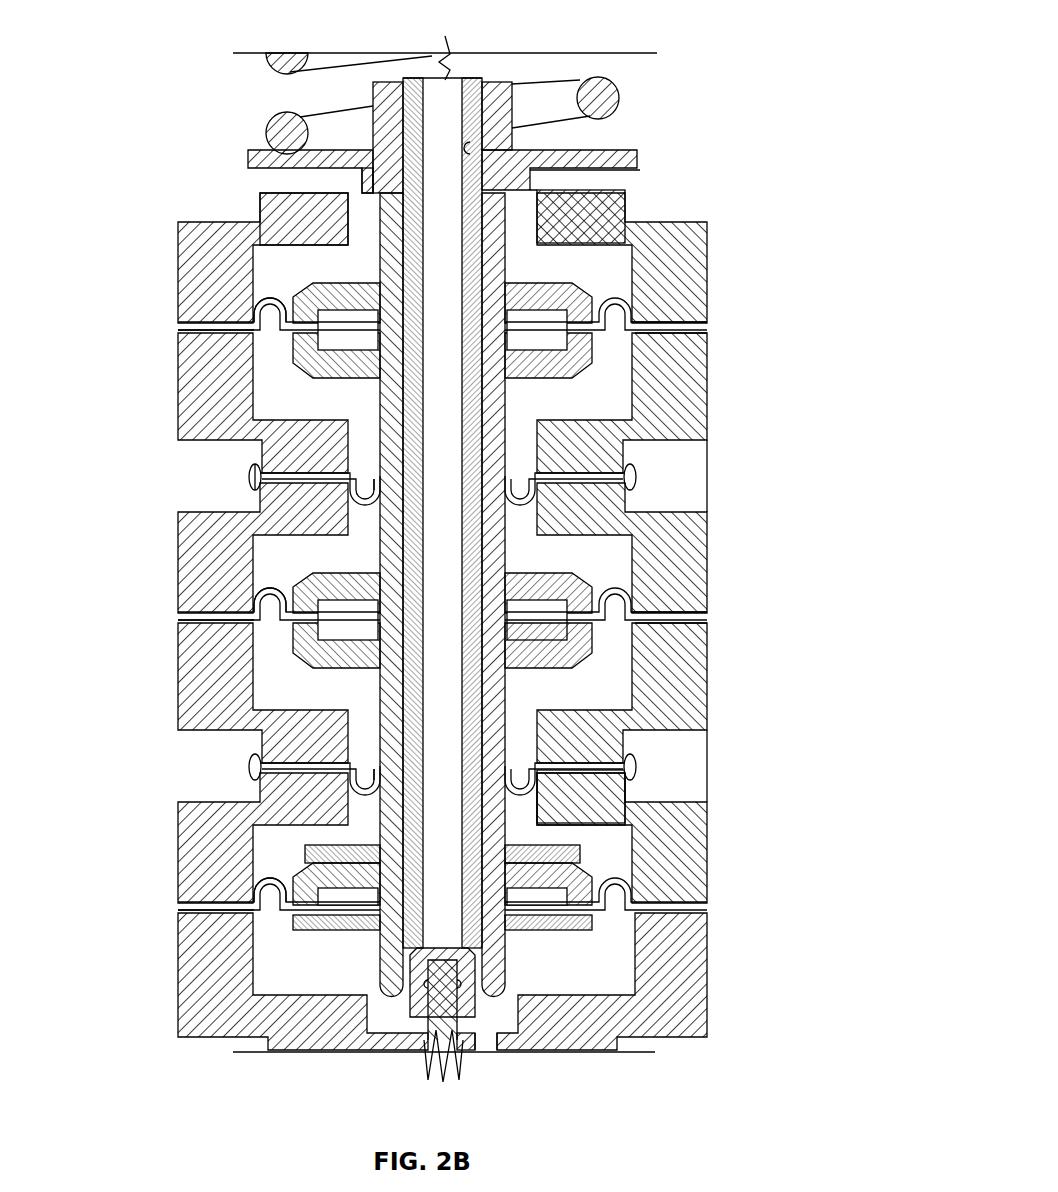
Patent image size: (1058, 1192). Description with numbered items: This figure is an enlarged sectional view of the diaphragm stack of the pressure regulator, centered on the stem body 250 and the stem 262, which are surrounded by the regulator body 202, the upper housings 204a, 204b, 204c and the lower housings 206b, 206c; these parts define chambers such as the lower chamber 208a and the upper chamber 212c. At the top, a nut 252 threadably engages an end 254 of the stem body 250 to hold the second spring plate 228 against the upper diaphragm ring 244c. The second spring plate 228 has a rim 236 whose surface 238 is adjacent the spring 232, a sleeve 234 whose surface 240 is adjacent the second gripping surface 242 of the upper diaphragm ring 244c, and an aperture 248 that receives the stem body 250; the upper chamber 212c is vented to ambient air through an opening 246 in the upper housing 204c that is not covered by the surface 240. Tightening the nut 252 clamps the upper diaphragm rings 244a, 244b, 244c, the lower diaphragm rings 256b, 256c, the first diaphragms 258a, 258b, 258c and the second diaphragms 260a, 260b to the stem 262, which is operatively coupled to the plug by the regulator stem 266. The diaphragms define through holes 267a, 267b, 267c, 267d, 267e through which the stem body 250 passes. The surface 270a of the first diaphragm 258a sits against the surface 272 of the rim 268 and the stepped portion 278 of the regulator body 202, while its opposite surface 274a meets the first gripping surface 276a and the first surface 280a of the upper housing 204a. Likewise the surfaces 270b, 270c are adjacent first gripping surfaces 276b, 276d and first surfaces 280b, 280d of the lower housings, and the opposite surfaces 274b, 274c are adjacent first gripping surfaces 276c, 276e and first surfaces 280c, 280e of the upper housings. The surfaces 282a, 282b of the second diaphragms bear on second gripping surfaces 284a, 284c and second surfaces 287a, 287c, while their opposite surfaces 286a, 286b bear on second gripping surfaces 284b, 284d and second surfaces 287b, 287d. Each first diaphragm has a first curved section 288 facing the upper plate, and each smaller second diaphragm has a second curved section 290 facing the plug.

The regulator body 202 is at (690, 1003).
The upper housing 204a is at (700, 850).
The upper housing 204b is at (700, 560).
The upper housing 204c is at (700, 250).
The lower housing 206b is at (678, 703).
The lower housing 206c is at (678, 413).
The lower chamber 208a is at (540, 985).
The upper chamber 212c is at (245, 265).
The second spring plate 228 is at (255, 157).
The spring 232 is at (278, 127).
The sleeve 234 is at (362, 176).
The rim 236 is at (624, 160).
The surface 238 is at (612, 116).
The surface 240 is at (500, 198).
The second gripping surface 242 is at (535, 178).
The upper diaphragm ring 244a is at (560, 860).
The upper diaphragm ring 244b is at (518, 587).
The upper diaphragm ring 244c is at (518, 297).
The opening 246 is at (345, 199).
The aperture 248 is at (473, 147).
The stem body 250 is at (400, 195).
The nut 252 is at (496, 80).
The end 254 is at (438, 70).
The lower diaphragm ring 256b is at (520, 655).
The lower diaphragm ring 256c is at (520, 365).
The first diaphragm 258a is at (200, 903).
The first diaphragm 258b is at (200, 613).
The first diaphragm 258c is at (200, 323).
The second diaphragm 260a is at (251, 764).
The second diaphragm 260b is at (251, 474).
The stem 262 is at (412, 112).
The regulator stem 266 is at (440, 1050).
The through hole 267a is at (383, 922).
The through hole 267b is at (410, 752).
The through hole 267c is at (383, 642).
The through hole 267d is at (410, 462).
The through hole 267e is at (383, 352).
The rim 268 is at (600, 935).
The surface 270a is at (680, 930).
The surface 270b is at (677, 628).
The surface 270c is at (677, 338).
The surface 272 is at (690, 905).
The opposite surface 274a is at (217, 903).
The opposite surface 274b is at (217, 613).
The opposite surface 274c is at (217, 323).
The first gripping surface 276a is at (392, 913).
The first gripping surface 276b is at (506, 607).
The first gripping surface 276c is at (392, 623).
The first gripping surface 276d is at (506, 317).
The first gripping surface 276e is at (392, 333).
The stepped portion 278 is at (590, 922).
The first surface 280a is at (183, 903).
The first surface 280b is at (690, 623).
The first surface 280c is at (183, 613).
The first surface 280d is at (690, 333).
The first surface 280e is at (183, 323).
The surface 282a is at (285, 766).
The surface 282b is at (285, 476).
The second gripping surface 284a is at (300, 760).
The second gripping surface 284b is at (692, 812).
The second gripping surface 284c is at (300, 470).
The second gripping surface 284d is at (692, 522).
The opposite surface 286a is at (638, 764).
The opposite surface 286b is at (638, 474).
The second surface 287a is at (545, 768).
The second surface 287b is at (708, 765).
The second surface 287c is at (708, 475).
The second surface 287d is at (545, 478).
The first curved section 288 is at (230, 323).
The second curved section 290 is at (300, 480).